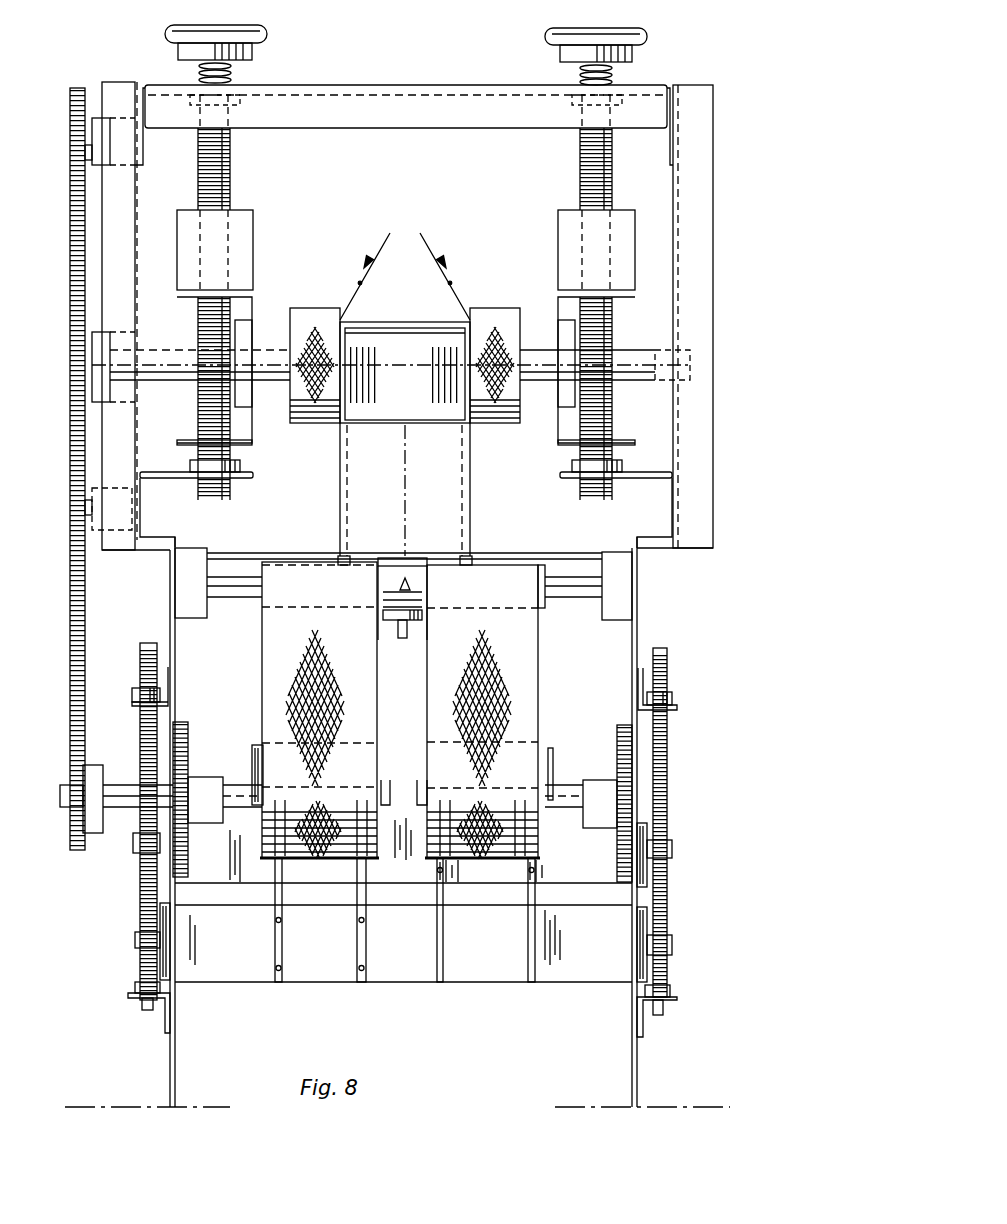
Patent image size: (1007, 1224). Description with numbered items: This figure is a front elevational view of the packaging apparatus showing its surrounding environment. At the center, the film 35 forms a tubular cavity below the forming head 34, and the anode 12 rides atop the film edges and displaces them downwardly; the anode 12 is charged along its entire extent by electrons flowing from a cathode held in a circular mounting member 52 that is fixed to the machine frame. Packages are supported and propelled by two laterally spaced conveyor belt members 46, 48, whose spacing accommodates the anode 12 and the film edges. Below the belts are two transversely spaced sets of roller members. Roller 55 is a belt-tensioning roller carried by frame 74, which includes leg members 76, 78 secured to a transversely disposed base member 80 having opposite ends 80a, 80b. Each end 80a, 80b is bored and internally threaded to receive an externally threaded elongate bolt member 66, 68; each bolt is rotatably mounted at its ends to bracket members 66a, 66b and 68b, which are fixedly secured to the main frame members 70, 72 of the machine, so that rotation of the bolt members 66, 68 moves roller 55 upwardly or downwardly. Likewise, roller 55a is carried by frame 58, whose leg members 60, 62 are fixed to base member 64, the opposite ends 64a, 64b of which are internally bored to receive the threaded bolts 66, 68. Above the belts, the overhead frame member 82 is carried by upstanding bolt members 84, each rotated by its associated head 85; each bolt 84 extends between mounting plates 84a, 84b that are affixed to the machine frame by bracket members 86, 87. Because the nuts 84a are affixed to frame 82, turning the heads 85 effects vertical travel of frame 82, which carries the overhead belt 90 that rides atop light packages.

The anode 12 is at (405, 557).
The forming head 34 is at (416, 382).
The film 35 is at (448, 285).
The conveyor belt member 46 is at (293, 560).
The conveyor belt member 48 is at (500, 556).
The circular mounting member 52 is at (423, 622).
The belt-tensioning roller 55 is at (512, 742).
The roller 55a is at (280, 745).
The frame 58 is at (252, 753).
The leg member 60 is at (275, 913).
The leg member 62 is at (365, 875).
The base member 64 is at (493, 982).
The end of base member 64a is at (138, 942).
The end of base member 64b is at (672, 942).
The externally threaded elongate bolt member 66 is at (140, 740).
The bracket member 66a is at (137, 688).
The bracket member 66b is at (130, 998).
The externally threaded elongate bolt member 68 is at (677, 705).
The bracket member 68b is at (673, 1002).
The main frame member 70 is at (160, 611).
The main frame member 72 is at (648, 614).
The frame 74 is at (555, 755).
The leg member 76 is at (438, 880).
The leg member 78 is at (527, 877).
The base member 80 is at (580, 887).
The end of base member 80a is at (140, 847).
The end of base member 80b is at (668, 840).
The overhead frame member 82 is at (257, 300).
The upstanding bolt member 84 is at (227, 183).
The mounting plate 84a is at (385, 92).
The mounting plate 84b is at (253, 473).
The head 85 is at (262, 26).
The bracket member 86 is at (167, 82).
The bracket member 87 is at (160, 478).
The overhead belt 90 is at (495, 300).